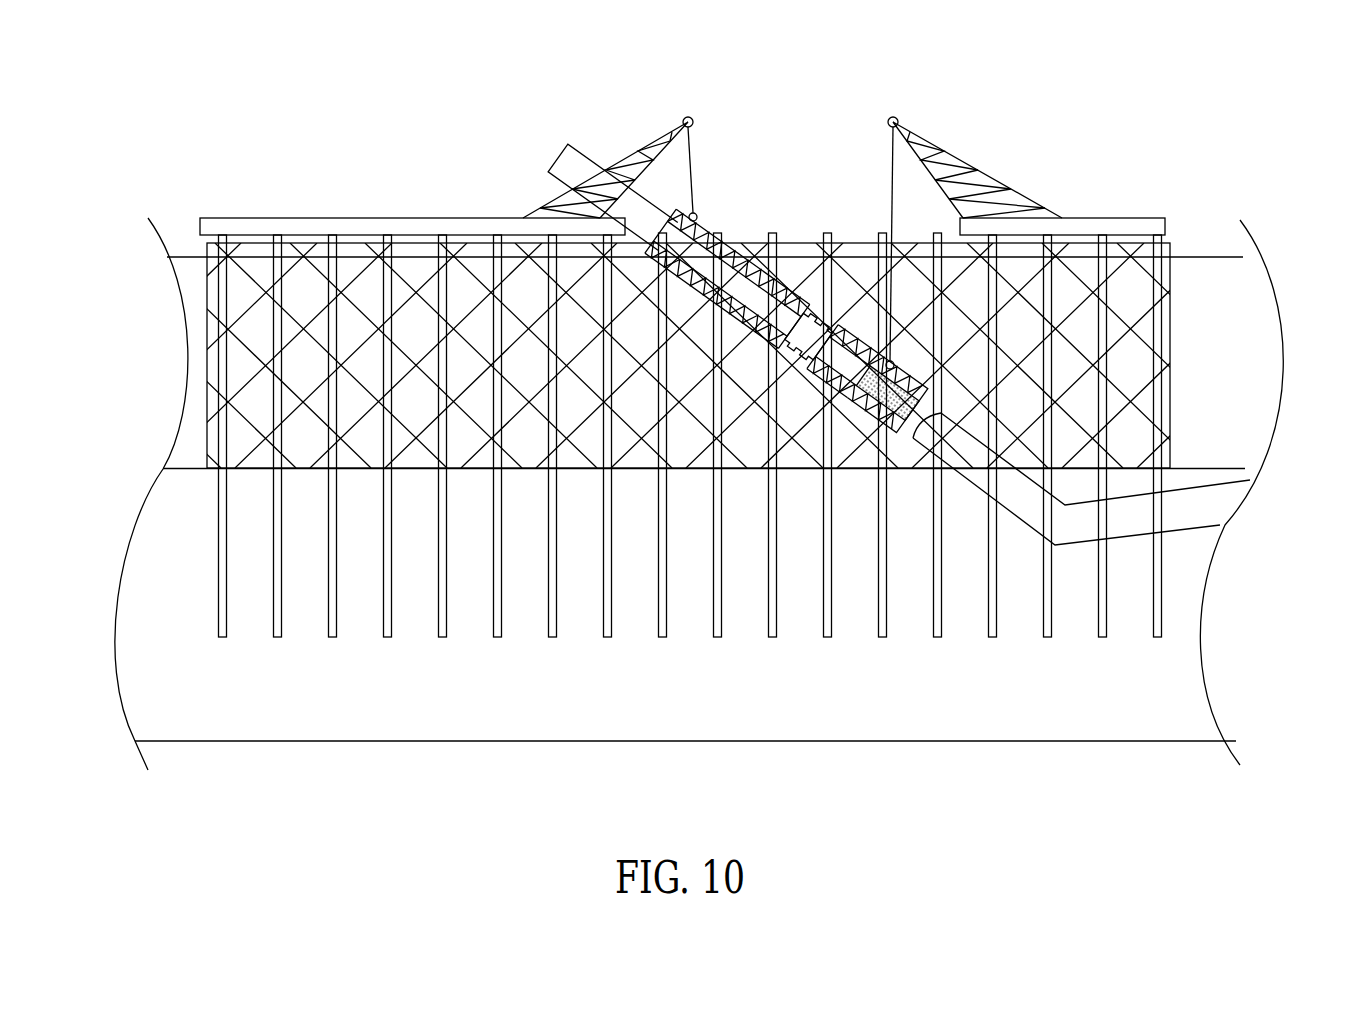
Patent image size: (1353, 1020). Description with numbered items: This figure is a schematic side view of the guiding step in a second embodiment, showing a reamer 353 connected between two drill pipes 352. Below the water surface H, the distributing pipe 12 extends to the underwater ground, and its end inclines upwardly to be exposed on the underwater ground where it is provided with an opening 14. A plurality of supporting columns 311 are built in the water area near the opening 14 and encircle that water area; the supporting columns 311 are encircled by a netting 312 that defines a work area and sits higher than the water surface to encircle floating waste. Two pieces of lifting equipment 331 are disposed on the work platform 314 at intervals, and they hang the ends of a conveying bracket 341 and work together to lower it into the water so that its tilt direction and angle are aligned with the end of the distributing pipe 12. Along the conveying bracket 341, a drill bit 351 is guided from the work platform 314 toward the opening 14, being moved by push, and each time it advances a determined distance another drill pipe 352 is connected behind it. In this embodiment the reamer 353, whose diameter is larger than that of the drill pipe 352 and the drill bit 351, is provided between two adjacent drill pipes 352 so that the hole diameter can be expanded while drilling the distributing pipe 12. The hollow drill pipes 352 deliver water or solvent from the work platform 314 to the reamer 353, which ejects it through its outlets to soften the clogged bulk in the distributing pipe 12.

The water surface H is at (193, 253).
The distributing pipe 12 is at (1219, 524).
The opening 14 is at (911, 438).
The supporting columns 311 is at (232, 325).
The netting 312 is at (1176, 248).
The work platform 314 is at (370, 218).
The lifting equipment 331 is at (617, 150).
The conveying bracket 341 is at (708, 226).
The drill bit 351 is at (862, 374).
The drill pipe 352 is at (856, 345).
The reamer 353 is at (790, 345).